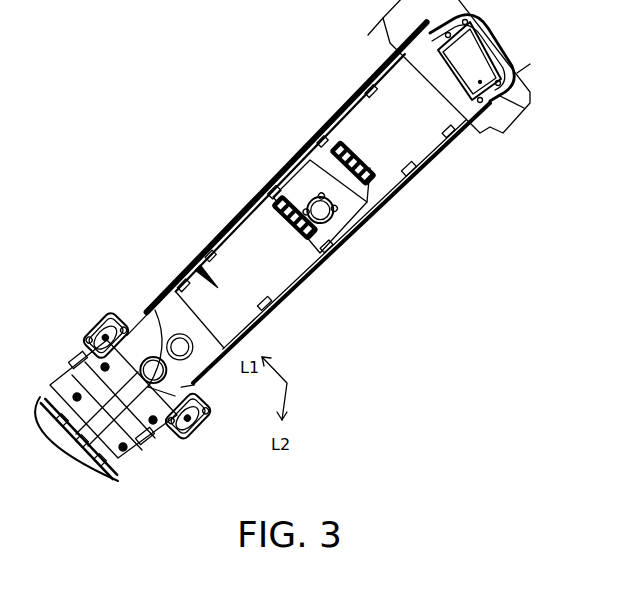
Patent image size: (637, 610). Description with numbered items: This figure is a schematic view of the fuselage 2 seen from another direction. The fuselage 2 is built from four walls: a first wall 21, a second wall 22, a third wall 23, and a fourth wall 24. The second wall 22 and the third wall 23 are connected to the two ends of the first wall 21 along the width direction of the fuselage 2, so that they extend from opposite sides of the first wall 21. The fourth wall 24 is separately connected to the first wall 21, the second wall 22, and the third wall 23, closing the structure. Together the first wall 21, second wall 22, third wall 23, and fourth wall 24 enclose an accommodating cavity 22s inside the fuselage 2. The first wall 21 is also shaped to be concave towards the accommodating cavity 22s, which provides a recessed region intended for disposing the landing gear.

The fuselage 2 is at (207, 42).
The first wall 21 is at (255, 253).
The second wall 22 is at (320, 263).
The accommodating cavity 22s is at (215, 288).
The third wall 23 is at (273, 178).
The fourth wall 24 is at (180, 300).